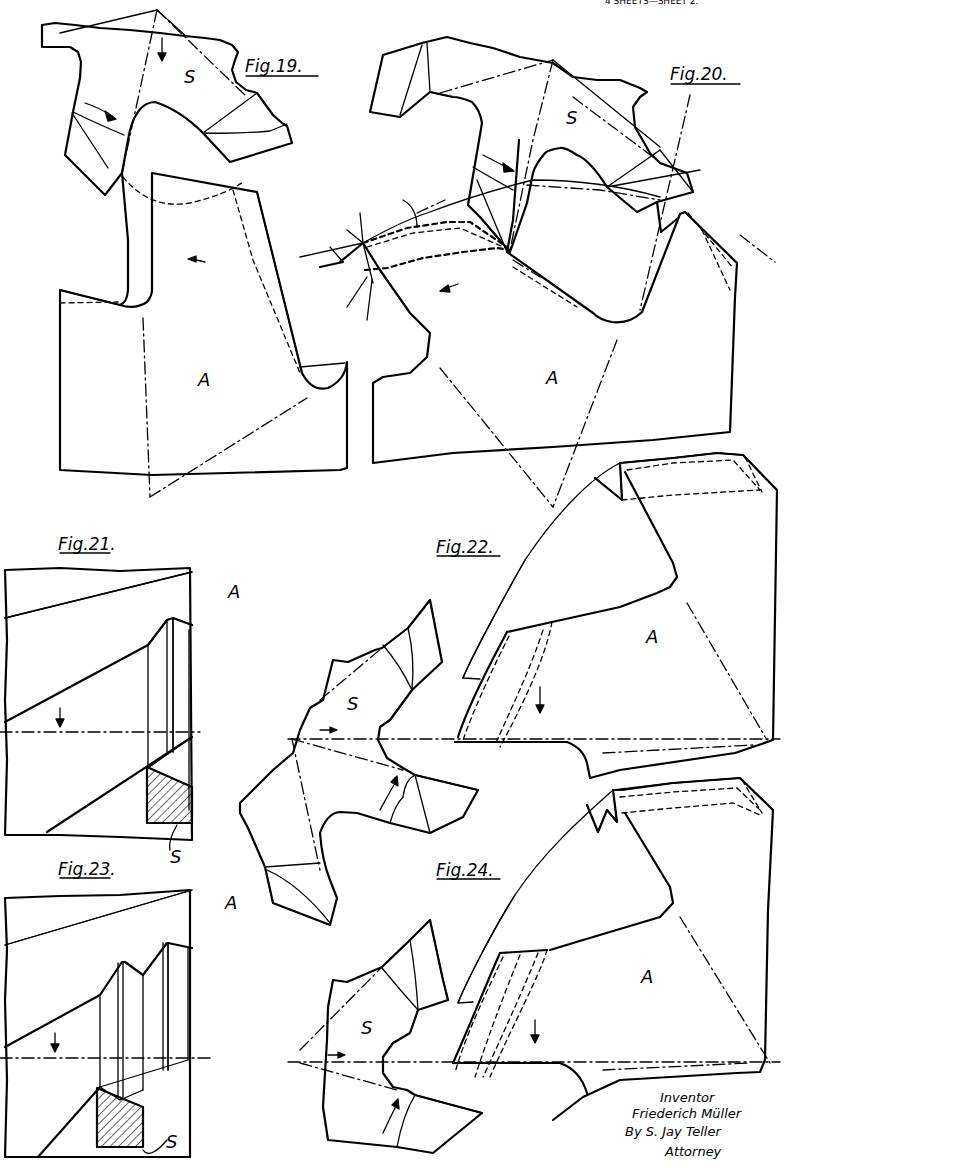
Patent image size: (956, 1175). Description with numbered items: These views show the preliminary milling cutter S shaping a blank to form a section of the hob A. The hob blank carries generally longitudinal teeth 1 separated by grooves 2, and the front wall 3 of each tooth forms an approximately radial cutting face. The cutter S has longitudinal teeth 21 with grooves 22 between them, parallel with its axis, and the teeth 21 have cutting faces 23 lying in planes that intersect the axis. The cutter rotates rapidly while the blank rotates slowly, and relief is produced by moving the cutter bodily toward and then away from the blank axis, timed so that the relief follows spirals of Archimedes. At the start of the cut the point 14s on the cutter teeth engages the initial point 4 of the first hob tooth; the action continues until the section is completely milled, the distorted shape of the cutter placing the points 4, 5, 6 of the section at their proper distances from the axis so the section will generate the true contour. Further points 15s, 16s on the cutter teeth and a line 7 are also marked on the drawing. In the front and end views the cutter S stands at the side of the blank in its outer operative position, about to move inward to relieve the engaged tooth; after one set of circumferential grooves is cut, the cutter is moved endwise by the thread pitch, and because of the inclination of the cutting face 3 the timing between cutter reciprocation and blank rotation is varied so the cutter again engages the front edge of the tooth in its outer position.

In FIG. 19, the longitudinal teeth 1 is at (233, 245).
In FIG. 20, the longitudinal teeth 1 is at (687, 260).
In FIG. 21, the longitudinal teeth 1 is at (188, 665).
In FIG. 23, the longitudinal teeth 1 is at (180, 997).
In FIG. 22, the longitudinal teeth 1 is at (710, 472).
In FIG. 24, the longitudinal teeth 1 is at (717, 793).
In FIG. 19, the grooves 2 is at (108, 278).
In FIG. 20, the grooves 2 is at (400, 360).
In FIG. 21, the grooves 2 is at (180, 612).
In FIG. 23, the grooves 2 is at (180, 925).
In FIG. 22, the grooves 2 is at (533, 578).
In FIG. 24, the grooves 2 is at (573, 877).
In FIG. 19, the front wall 3 is at (127, 242).
In FIG. 20, the front wall 3 is at (400, 318).
In FIG. 21, the front wall 3 is at (183, 573).
In FIG. 23, the front wall 3 is at (187, 893).
In FIG. 22, the front wall 3 is at (613, 520).
In FIG. 24, the front wall 3 is at (613, 848).
In FIG. 20, the initial point 4 is at (317, 270).
In FIG. 20, the point 5 is at (342, 237).
In FIG. 20, the point 6 is at (356, 304).
In FIG. 20, the arc line 7 is at (404, 209).
In FIG. 19, the point 14s is at (112, 160).
In FIG. 20, the point 14s is at (547, 237).
In FIG. 19, the side edge of slide strip 15s is at (118, 160).
In FIG. 20, the side edge of slide strip 15s is at (523, 210).
In FIG. 19, the corner point of slide strip 16s is at (105, 195).
In FIG. 20, the corner point of slide strip 16s is at (500, 257).
In FIG. 19, the longitudinal teeth 21 is at (77, 173).
In FIG. 20, the longitudinal teeth 21 is at (387, 85).
In FIG. 21, the longitudinal teeth 21 is at (180, 792).
In FIG. 23, the longitudinal teeth 21 is at (132, 1117).
In FIG. 22, the longitudinal teeth 21 is at (430, 630).
In FIG. 24, the longitudinal teeth 21 is at (433, 937).
In FIG. 19, the grooves 22 is at (187, 133).
In FIG. 20, the grooves 22 is at (445, 118).
In FIG. 22, the grooves 22 is at (407, 717).
In FIG. 24, the grooves 22 is at (408, 1052).
In FIG. 19, the cutting faces 23 is at (122, 173).
In FIG. 20, the cutting faces 23 is at (660, 162).
In FIG. 22, the cutting faces 23 is at (393, 632).
In FIG. 24, the cutting faces 23 is at (393, 967).